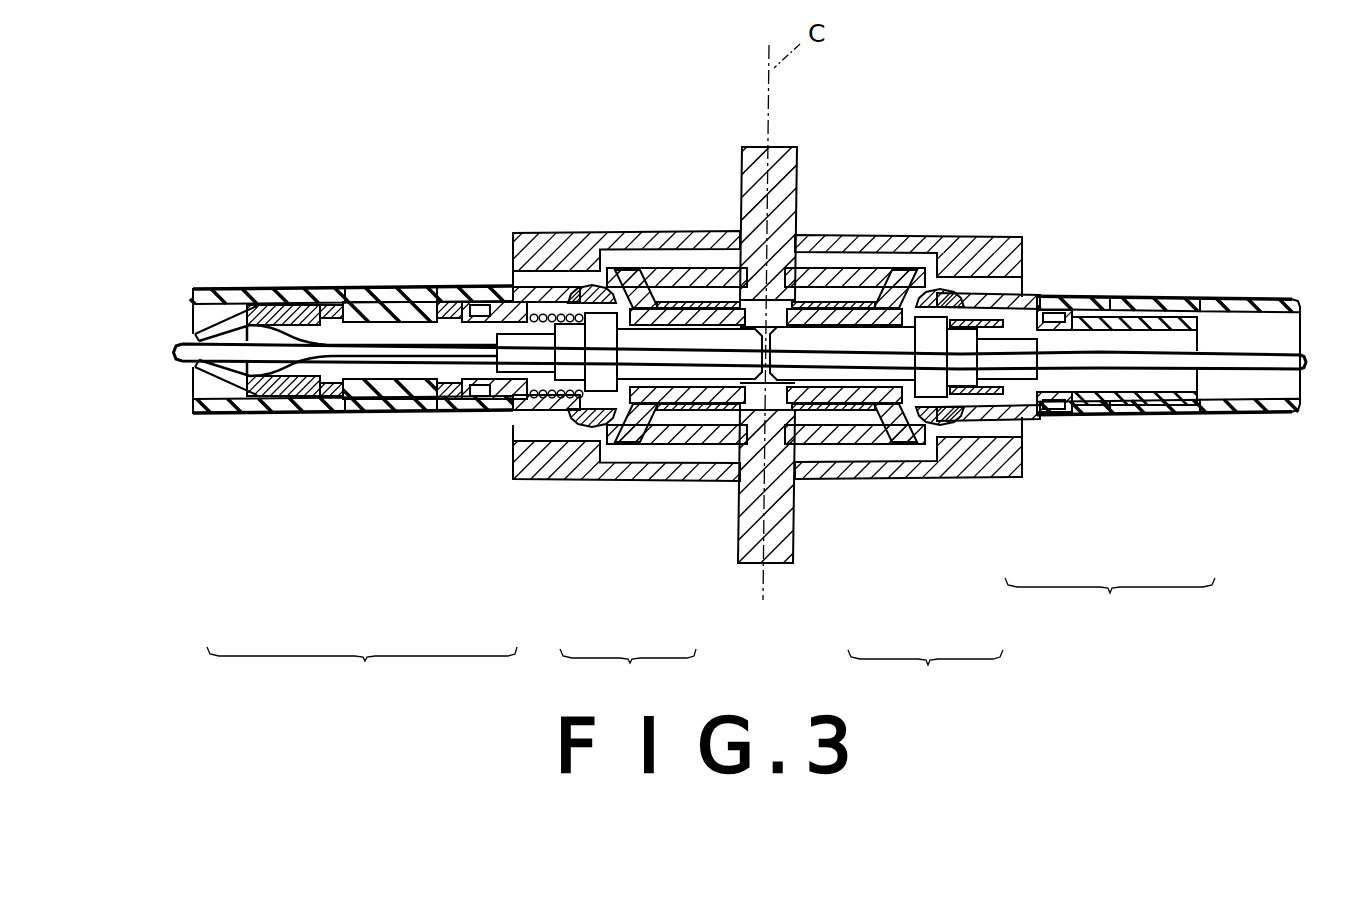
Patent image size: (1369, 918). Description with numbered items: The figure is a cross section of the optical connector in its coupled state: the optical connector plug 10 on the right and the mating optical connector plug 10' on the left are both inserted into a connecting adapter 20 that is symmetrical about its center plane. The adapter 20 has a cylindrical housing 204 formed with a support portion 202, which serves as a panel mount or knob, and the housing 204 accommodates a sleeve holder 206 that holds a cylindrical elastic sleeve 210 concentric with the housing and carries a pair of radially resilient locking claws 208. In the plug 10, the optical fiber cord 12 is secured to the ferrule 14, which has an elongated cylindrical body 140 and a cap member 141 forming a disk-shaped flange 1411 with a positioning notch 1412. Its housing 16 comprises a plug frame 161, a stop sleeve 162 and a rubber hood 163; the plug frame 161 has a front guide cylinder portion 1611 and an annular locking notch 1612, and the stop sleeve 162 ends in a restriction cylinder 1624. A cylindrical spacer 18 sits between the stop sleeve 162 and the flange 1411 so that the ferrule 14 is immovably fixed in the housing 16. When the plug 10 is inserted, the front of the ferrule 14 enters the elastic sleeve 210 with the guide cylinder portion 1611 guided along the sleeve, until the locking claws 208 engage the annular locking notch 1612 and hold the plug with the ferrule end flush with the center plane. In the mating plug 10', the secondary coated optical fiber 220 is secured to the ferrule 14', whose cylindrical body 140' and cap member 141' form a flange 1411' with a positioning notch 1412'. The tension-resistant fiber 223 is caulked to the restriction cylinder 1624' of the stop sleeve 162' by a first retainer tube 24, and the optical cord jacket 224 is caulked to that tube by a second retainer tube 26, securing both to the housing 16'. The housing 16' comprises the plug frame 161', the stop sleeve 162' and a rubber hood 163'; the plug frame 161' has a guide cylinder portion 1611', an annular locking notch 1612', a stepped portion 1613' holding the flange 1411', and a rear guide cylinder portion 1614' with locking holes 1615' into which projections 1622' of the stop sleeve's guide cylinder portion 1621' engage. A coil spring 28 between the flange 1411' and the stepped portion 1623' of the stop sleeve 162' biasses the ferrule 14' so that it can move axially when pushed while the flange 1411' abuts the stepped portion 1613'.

The optical connector plug 10 is at (1164, 279).
The mating optical connector plug 10' is at (353, 263).
The optical fiber cord 12 is at (1228, 356).
The ferrule 14 is at (925, 674).
The ferrule 14' is at (628, 670).
The housing 16 is at (1110, 606).
The housing 16' is at (362, 668).
The cylindrical spacer 18 is at (1032, 300).
The connecting adapter 20 is at (796, 144).
The first retainer tube 24 is at (380, 288).
The second retainer tube 26 is at (290, 300).
The coil spring 28 is at (567, 250).
The cylindrical body 140 is at (903, 485).
The cylindrical body 140' is at (689, 485).
The cap member 141 is at (953, 482).
The cap member 141' is at (616, 477).
The plug frame 161 is at (1042, 435).
The stop sleeve 162 is at (1144, 435).
The rubber hood 163 is at (1237, 435).
The plug frame 161' is at (488, 464).
The stop sleeve 162' is at (406, 472).
The rubber hood 163' is at (267, 463).
The support portion 202 is at (782, 196).
The cylindrical housing 204 is at (915, 237).
The sleeve holder 206 is at (782, 470).
The locking claws 208 is at (640, 270).
The elastic sleeve 210 is at (712, 440).
The secondary coated optical fiber 220 is at (413, 362).
The tension-resistant fiber 223 is at (300, 414).
The optical cord jacket 224 is at (243, 300).
The disk-shaped flange 1411 is at (1004, 279).
The positioning notch 1412 is at (1032, 300).
The disk-shaped flange 1411' is at (574, 466).
The positioning notch 1412' is at (566, 486).
The guide cylinder portion 1611 is at (855, 316).
The annular locking notch 1612 is at (862, 217).
The guide cylinder portion 1611' is at (677, 312).
The annular locking notch 1612' is at (686, 201).
The stepped portion 1613' is at (594, 242).
The guide cylinder portion 1614' is at (600, 383).
The locking holes 1615' is at (491, 244).
The guide cylinder portion 1621' is at (470, 511).
The projections 1622' is at (494, 301).
The stepped portion 1623' is at (545, 218).
The restriction cylinder 1624 is at (1134, 315).
The restriction cylinder 1624' is at (397, 400).